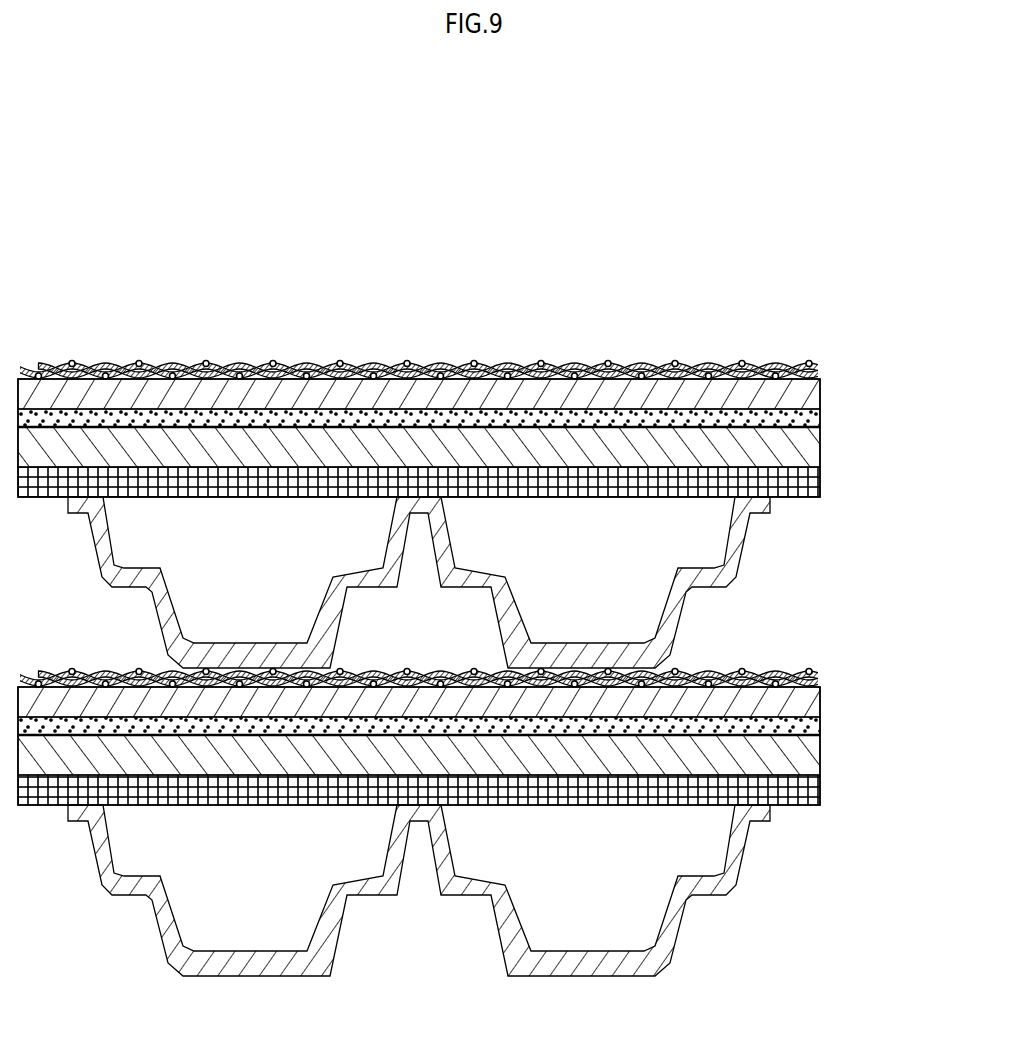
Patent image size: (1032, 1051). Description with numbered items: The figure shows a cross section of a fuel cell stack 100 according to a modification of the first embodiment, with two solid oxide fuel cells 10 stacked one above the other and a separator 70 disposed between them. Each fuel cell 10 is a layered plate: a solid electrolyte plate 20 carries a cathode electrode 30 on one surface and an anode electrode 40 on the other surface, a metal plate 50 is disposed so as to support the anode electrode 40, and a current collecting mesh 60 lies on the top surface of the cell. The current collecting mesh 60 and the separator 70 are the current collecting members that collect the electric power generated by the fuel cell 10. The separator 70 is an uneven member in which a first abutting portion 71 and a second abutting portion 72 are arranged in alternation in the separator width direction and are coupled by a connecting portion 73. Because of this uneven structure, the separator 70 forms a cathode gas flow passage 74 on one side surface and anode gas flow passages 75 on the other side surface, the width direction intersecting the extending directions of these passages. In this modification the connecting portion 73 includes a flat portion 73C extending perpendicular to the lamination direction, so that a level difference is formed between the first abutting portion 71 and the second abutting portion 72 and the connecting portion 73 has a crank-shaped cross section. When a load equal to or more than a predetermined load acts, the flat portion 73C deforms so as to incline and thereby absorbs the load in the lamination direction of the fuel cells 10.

The fuel cell stack 100 is at (763, 268).
The solid oxide fuel cell 10 is at (830, 361).
The solid electrolyte plate 20 is at (812, 727).
The cathode electrode 30 is at (812, 702).
The anode electrode 40 is at (812, 757).
The metal plate 50 is at (812, 787).
The current collecting mesh 60 is at (818, 677).
The separator 70 is at (750, 530).
The first abutting portion 71 is at (243, 649).
The second abutting portion 72 is at (90, 500).
The connecting portion 73 is at (457, 537).
The flat portion 73C is at (475, 568).
The cathode gas flow passage 74 is at (432, 641).
The anode gas flow passage 75 is at (262, 567).